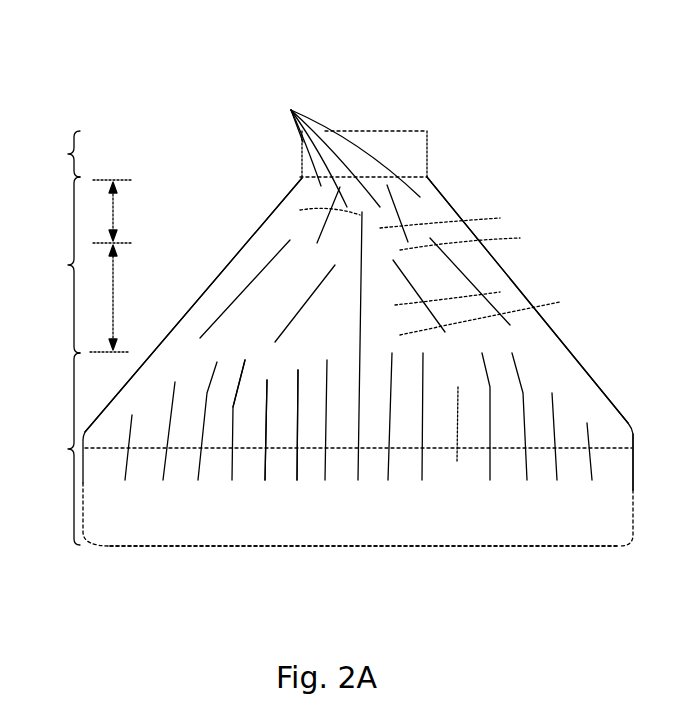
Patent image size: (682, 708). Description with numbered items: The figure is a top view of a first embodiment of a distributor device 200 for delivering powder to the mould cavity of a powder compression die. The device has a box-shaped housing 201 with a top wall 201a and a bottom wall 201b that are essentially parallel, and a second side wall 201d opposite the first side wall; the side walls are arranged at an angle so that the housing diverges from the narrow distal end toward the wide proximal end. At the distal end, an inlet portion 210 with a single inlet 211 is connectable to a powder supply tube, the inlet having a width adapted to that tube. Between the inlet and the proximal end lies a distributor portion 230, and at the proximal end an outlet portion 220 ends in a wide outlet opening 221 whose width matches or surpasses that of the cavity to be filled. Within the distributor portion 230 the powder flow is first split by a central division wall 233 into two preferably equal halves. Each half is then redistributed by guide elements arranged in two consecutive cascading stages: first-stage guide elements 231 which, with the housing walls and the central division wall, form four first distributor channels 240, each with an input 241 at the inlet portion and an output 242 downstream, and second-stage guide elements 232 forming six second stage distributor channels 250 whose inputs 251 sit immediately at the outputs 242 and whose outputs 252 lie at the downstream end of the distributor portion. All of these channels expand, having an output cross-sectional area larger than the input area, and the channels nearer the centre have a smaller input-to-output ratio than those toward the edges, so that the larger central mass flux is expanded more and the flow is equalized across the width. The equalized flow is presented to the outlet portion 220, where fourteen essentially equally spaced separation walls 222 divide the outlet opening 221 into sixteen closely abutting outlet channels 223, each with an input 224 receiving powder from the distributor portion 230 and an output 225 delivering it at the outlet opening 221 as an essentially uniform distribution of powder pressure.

The distributor device 200 is at (483, 82).
The housing 201 is at (445, 180).
The top wall 201a is at (473, 547).
The bottom wall 201b is at (538, 447).
The second side wall 201d is at (230, 260).
The inlet portion 210 is at (227, 154).
The inlet 211 is at (366, 128).
The outlet portion 220 is at (329, 449).
The outlet opening 221 is at (384, 503).
The separation walls 222 is at (267, 453).
The outlet channels 223 is at (253, 445).
The input 224 is at (250, 375).
The output 225 is at (253, 478).
The distributor portion 230 is at (80, 265).
The guide elements 231 is at (300, 182).
The guide elements 232 is at (210, 323).
The central division wall 233 is at (360, 322).
The first distributor channels 240 is at (340, 226).
The input 241 is at (345, 147).
The output 242 is at (400, 240).
The second stage distributor channels 250 is at (340, 290).
The input 251 is at (420, 258).
The output 252 is at (470, 330).